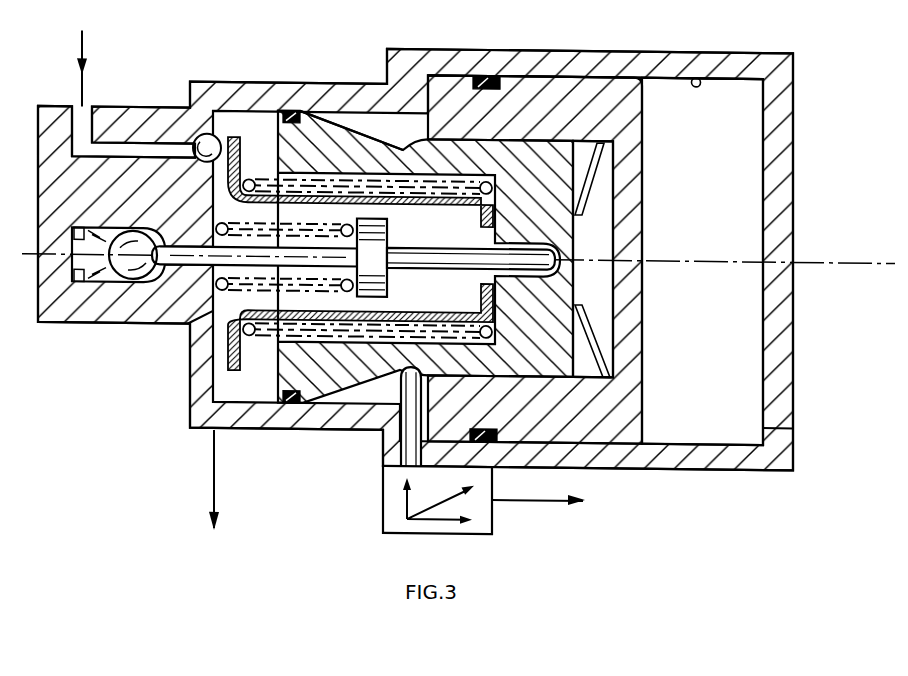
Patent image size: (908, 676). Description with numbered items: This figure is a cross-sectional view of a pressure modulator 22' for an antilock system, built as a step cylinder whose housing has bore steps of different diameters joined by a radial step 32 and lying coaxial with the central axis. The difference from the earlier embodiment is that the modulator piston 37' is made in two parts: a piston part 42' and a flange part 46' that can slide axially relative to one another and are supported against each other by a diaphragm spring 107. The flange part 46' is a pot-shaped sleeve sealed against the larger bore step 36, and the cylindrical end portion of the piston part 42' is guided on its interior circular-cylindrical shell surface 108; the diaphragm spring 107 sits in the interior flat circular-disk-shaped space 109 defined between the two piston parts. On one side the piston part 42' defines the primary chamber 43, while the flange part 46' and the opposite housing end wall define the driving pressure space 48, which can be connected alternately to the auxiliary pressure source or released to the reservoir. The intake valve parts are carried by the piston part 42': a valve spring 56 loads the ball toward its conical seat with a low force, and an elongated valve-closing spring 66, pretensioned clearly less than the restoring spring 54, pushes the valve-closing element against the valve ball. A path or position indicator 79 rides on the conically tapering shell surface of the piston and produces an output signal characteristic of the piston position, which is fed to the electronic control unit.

The pressure modulator 22' is at (458, 258).
The radial step 32 is at (427, 90).
The larger bore step 36 is at (696, 74).
The modulator piston 37' is at (351, 76).
The piston part 42' is at (425, 203).
The primary chamber 43 is at (240, 119).
The flange part 46' is at (535, 221).
The driving pressure space 48 is at (737, 303).
The restoring spring 54 is at (233, 296).
The valve spring 56 is at (90, 277).
The valve-closing spring 66 is at (260, 334).
The path or position indicator 79 is at (393, 509).
The diaphragm spring 107 is at (610, 181).
The interior circular-cylindrical shell surface 108 is at (534, 78).
The interior flat circular-disk-shaped space 109 is at (593, 236).